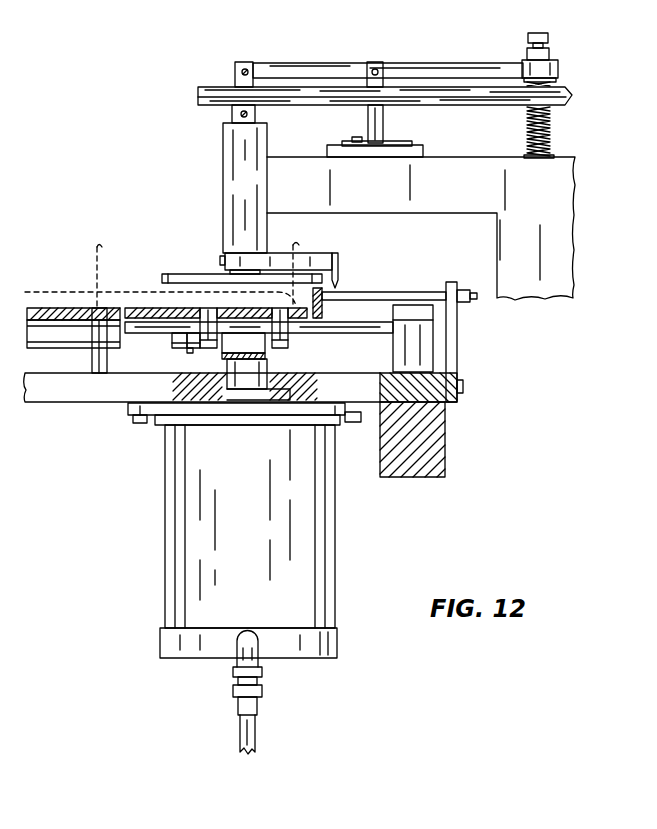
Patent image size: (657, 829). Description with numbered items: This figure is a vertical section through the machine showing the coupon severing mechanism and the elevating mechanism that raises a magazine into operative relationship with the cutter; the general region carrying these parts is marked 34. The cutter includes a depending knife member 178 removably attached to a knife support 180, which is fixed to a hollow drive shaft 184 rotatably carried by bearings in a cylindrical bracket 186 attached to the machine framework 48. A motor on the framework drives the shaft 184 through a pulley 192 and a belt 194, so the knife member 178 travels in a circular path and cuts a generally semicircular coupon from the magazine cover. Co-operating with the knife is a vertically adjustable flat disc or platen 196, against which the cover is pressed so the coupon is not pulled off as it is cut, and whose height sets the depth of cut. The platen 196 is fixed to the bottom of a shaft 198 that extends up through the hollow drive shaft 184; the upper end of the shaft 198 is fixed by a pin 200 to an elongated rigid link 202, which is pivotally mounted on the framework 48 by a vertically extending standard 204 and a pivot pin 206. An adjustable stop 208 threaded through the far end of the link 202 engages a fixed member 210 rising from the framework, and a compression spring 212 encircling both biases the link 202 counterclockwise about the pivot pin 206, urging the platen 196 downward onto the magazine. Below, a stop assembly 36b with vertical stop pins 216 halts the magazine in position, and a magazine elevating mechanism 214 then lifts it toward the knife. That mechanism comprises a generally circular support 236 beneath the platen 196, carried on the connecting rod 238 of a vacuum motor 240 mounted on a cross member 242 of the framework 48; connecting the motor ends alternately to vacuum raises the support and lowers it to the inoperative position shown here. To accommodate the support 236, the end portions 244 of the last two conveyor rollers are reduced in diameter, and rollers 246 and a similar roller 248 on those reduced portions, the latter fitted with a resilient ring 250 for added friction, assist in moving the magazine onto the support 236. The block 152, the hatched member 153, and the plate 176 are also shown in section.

The assembly 34 is at (150, 106).
The stop assembly 36b is at (85, 364).
The machine framework 48 is at (349, 207).
The block 152 is at (418, 335).
The hatched bar 153 is at (55, 309).
The plate 176 is at (420, 360).
The knife member 178 is at (338, 280).
The knife support 180 is at (248, 252).
The hollow drive shaft 184 is at (230, 117).
The cylindrical bracket 186 is at (232, 162).
The pulley 192 is at (212, 87).
The belt 194 is at (308, 98).
The platen 196 is at (176, 276).
The shaft 198 is at (247, 65).
The pin 200 is at (248, 71).
The link 202 is at (440, 66).
The standard 204 is at (384, 122).
The pivot pin 206 is at (378, 62).
The adjustable stop 208 is at (548, 40).
The fixed member 210 is at (552, 124).
The compression spring 212 is at (530, 110).
The magazine elevating mechanism 214 is at (142, 438).
The stop pins 216 is at (298, 247).
The circular support 236 is at (160, 308).
The connecting rod 238 is at (250, 360).
The vacuum motor 240 is at (268, 513).
The cross member 242 is at (50, 397).
The reduced diameter end portions 244 is at (148, 334).
The rollers 246 is at (208, 348).
The roller 248 is at (178, 350).
The resilient ring 250 is at (187, 353).